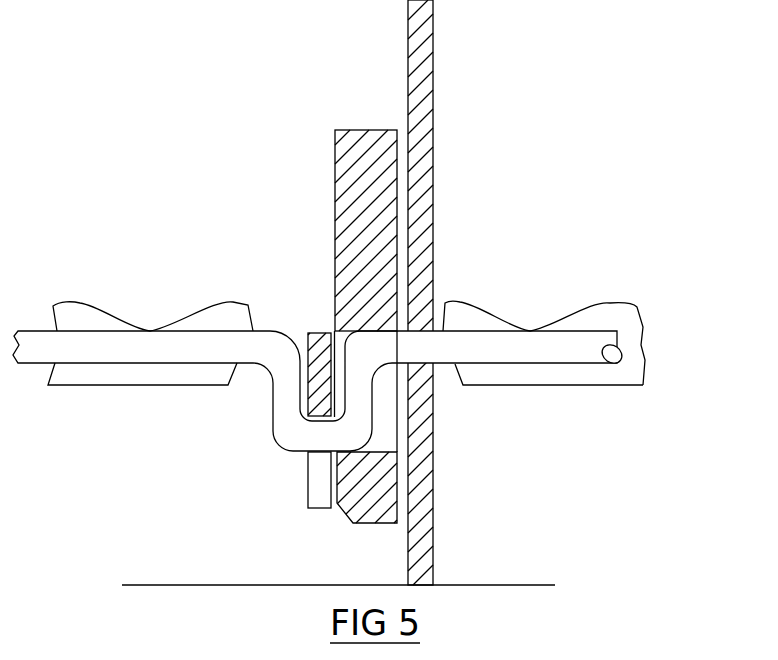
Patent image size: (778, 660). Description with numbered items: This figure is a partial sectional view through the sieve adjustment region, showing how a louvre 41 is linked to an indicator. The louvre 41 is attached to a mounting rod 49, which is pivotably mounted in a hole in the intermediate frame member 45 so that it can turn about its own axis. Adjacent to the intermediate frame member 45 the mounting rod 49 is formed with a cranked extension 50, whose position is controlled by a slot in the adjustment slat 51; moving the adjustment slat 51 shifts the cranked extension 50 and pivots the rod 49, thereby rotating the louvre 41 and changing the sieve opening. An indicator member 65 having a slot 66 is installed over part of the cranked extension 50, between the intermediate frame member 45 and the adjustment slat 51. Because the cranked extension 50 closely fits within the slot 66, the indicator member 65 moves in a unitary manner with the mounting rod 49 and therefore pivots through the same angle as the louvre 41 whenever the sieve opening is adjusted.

The louvre 41 is at (463, 317).
The intermediate frame member 45 is at (433, 76).
The mounting rod 49 is at (620, 352).
The cranked extension 50 is at (273, 407).
The adjustment slat 51 is at (308, 505).
The indicator member 65 is at (333, 192).
The slot 66 is at (387, 445).